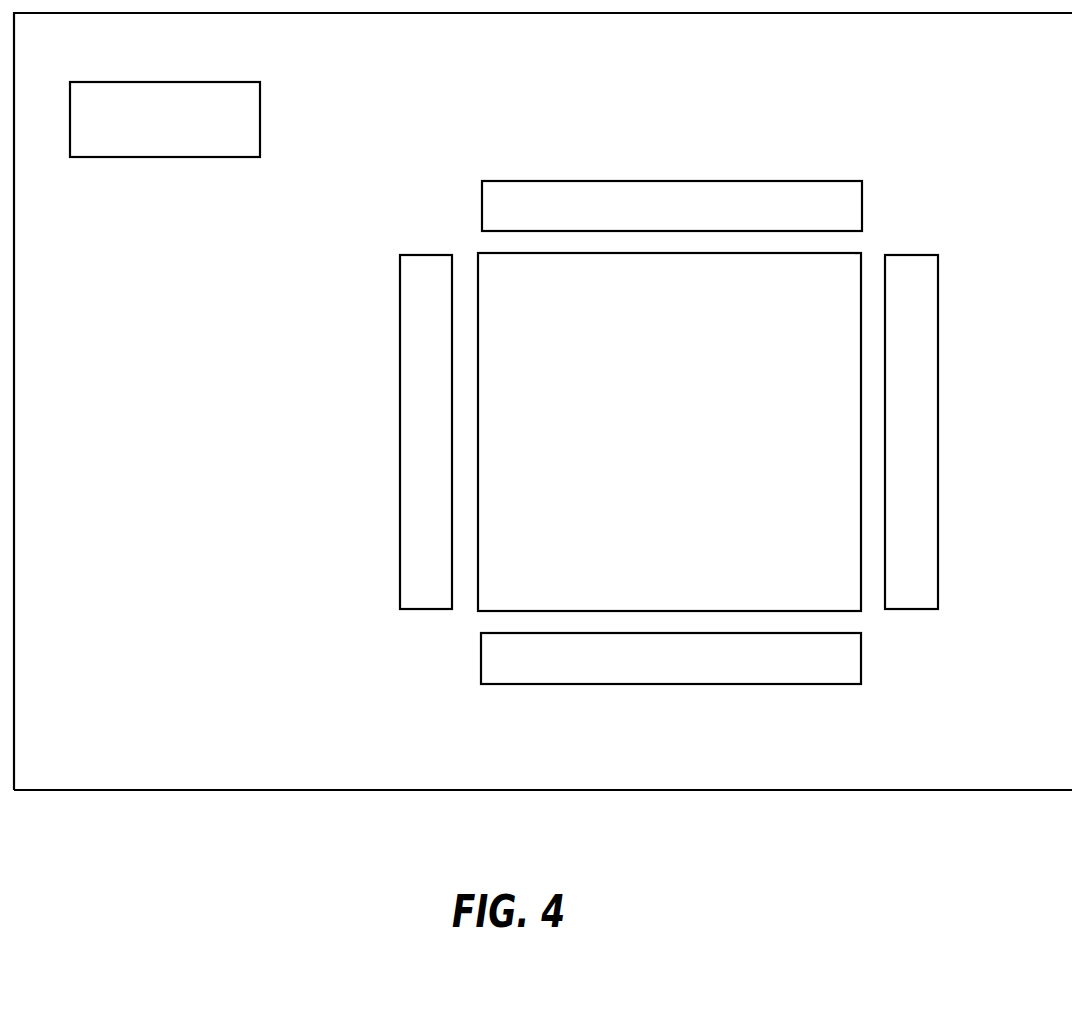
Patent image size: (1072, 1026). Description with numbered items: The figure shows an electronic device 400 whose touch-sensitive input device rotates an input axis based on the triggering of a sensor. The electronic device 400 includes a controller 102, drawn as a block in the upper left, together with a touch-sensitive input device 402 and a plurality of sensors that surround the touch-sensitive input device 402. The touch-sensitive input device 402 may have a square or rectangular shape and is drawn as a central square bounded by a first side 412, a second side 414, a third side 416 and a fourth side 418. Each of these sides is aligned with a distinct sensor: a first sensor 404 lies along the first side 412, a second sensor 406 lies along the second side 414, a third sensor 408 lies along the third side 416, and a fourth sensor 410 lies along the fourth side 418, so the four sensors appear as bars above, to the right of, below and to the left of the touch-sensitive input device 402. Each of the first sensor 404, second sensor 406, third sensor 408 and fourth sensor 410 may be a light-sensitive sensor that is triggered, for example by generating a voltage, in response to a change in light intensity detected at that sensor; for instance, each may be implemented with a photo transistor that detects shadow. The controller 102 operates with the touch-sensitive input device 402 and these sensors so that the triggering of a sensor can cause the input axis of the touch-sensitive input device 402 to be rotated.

The electronic device 400 is at (670, 45).
The controller 102 is at (105, 131).
The touch-sensitive input device 402 is at (528, 285).
The first sensor 404 is at (631, 181).
The second sensor 406 is at (938, 432).
The third sensor 408 is at (627, 684).
The fourth sensor 410 is at (400, 432).
The first side 412 is at (855, 255).
The second side 414 is at (860, 497).
The third side 416 is at (567, 611).
The fourth side 418 is at (479, 460).